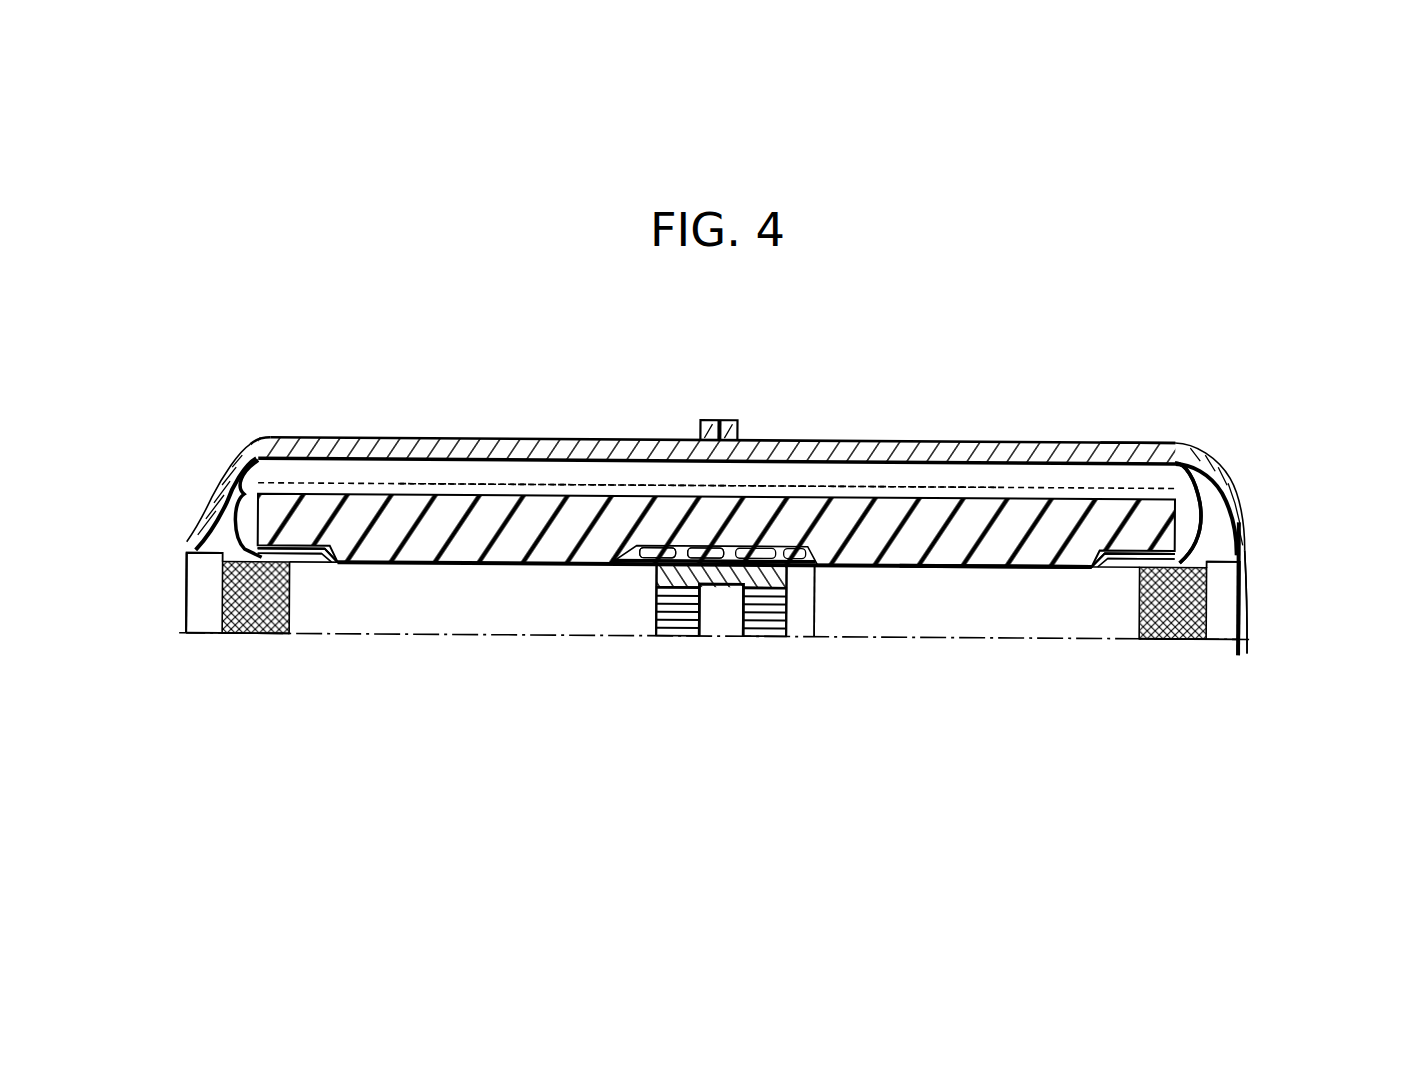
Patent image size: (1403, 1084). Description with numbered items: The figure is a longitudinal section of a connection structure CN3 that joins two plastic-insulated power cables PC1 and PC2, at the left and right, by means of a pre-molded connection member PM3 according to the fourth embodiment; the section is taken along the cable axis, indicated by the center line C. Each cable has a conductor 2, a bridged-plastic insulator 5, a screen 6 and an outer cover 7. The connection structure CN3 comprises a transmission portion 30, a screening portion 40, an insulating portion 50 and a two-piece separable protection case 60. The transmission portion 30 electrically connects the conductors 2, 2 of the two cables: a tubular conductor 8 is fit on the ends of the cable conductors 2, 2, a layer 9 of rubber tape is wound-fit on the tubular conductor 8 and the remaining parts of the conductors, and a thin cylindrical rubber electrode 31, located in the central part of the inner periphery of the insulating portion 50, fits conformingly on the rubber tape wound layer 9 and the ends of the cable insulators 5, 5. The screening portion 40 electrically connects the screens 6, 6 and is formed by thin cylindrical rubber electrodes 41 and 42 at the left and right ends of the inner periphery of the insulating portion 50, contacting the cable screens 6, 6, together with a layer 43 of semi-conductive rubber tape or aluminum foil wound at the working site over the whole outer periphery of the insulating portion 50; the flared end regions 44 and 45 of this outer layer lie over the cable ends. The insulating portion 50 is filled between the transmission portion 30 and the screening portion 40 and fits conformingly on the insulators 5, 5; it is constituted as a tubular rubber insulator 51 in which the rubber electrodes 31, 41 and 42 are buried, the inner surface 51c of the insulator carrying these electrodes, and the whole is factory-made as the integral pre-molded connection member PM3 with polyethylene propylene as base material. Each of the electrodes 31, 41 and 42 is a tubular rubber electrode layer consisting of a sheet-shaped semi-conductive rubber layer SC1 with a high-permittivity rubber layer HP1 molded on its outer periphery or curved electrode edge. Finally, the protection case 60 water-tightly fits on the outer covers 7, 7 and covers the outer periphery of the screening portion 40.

The conductor 2 is at (680, 640).
The bridged-plastic insulator 5 is at (510, 636).
The screen 6 is at (262, 640).
The outer cover 7 is at (207, 640).
The tubular conductor 8 is at (735, 640).
The rubber tape wound layer 9 is at (657, 583).
The transmission portion 30 is at (702, 640).
The rubber electrode 31 is at (821, 577).
The screening portion 40 is at (573, 480).
The rubber electrode 41 is at (323, 578).
The rubber electrode 42 is at (1118, 582).
The layer of semi-conductive rubber tape or aluminum foil 43 is at (442, 455).
The left flange 44 is at (212, 468).
The right flange 45 is at (1228, 522).
The insulating portion 50 is at (801, 482).
The tubular rubber insulator 51 is at (877, 513).
The plate lower surface 51c is at (1003, 566).
The protection case 60 is at (740, 440).
The high-permittivity rubber layer HP1 is at (282, 545).
The semi-conductive rubber layer SC1 is at (306, 572).
The pre-molded connection member PM3 is at (1185, 508).
The plastic-insulated power cable PC1 is at (183, 603).
The plastic-insulated power cable PC2 is at (1259, 592).
The connection structure CN3 is at (1082, 403).
The center line C is at (1030, 640).